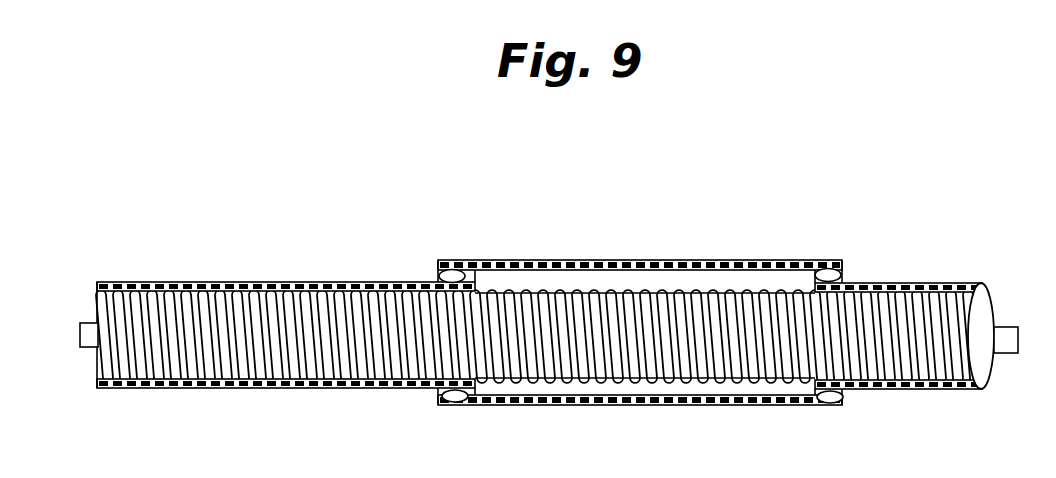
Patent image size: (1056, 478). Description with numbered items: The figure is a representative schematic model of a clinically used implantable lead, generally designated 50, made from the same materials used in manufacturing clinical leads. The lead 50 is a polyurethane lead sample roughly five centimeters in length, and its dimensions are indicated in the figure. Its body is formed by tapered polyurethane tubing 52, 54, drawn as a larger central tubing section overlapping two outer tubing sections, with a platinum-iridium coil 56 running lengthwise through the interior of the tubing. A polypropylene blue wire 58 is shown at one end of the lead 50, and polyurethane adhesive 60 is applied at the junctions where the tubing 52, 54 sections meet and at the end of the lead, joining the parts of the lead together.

The clinically used lead 50 is at (531, 311).
The tapered polyurethane tubing 52 is at (217, 281).
The tapered polyurethane tubing 54 is at (565, 260).
The platinum-iridium coil 56 is at (315, 281).
The polypropylene blue wire 58 is at (85, 323).
The polyurethane adhesive 60 is at (452, 262).